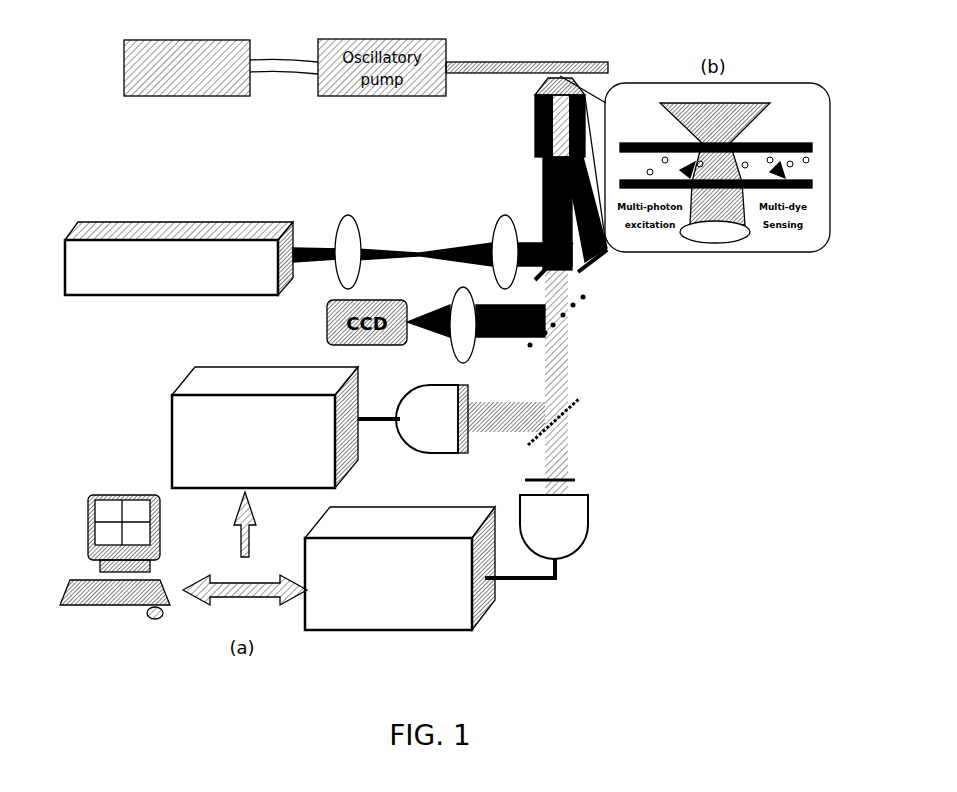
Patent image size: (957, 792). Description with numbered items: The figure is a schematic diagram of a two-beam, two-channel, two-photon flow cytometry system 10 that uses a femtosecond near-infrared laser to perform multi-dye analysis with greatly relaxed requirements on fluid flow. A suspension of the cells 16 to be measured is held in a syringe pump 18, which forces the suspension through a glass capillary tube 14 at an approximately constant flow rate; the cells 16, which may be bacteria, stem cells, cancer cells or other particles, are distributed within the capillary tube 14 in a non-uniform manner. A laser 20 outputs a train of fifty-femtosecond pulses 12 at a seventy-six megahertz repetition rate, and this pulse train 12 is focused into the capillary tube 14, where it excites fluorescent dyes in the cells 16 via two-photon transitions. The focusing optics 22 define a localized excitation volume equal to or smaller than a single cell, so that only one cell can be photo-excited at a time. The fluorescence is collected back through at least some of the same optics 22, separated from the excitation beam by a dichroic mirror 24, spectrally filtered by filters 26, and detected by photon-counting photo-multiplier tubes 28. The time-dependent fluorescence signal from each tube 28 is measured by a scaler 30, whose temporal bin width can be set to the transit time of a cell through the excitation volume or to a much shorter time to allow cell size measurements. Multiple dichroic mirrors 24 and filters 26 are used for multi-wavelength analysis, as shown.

The two-photon flow cytometry system 10 is at (780, 460).
The train of 50-fs pulses 12 is at (740, 212).
The glass capillary tube 14 is at (555, 66).
The cells 16 is at (810, 165).
The syringe pump 18 is at (200, 97).
The laser 20 is at (195, 222).
The focusing optics 22 is at (348, 215).
The dichroic mirror 24 is at (585, 410).
The filters 26 is at (465, 393).
The photon-counting photo-multiplier tubes 28 is at (422, 455).
The scaler 30 is at (172, 440).